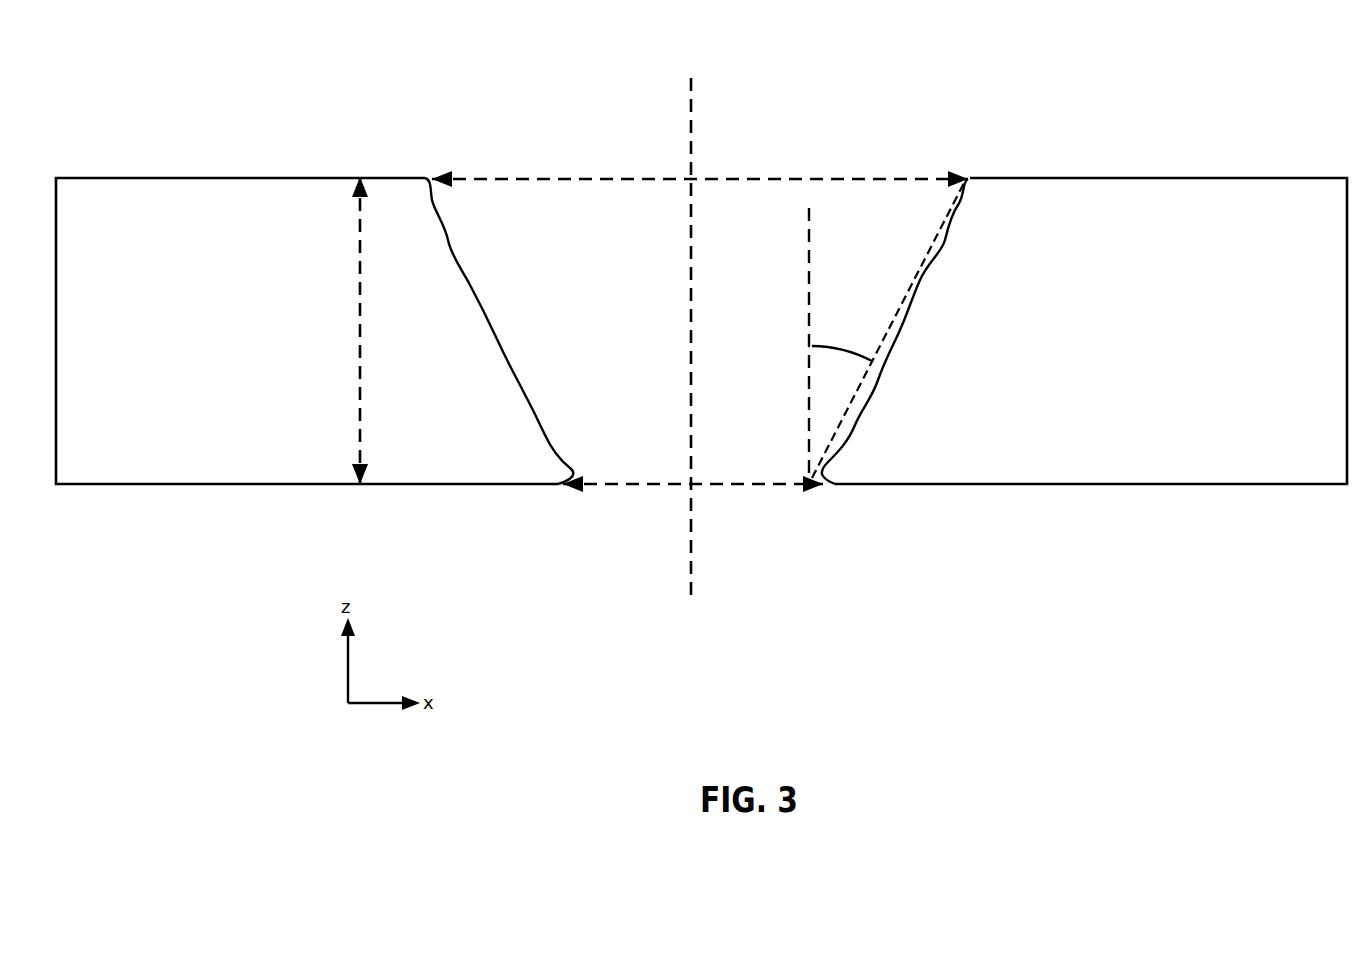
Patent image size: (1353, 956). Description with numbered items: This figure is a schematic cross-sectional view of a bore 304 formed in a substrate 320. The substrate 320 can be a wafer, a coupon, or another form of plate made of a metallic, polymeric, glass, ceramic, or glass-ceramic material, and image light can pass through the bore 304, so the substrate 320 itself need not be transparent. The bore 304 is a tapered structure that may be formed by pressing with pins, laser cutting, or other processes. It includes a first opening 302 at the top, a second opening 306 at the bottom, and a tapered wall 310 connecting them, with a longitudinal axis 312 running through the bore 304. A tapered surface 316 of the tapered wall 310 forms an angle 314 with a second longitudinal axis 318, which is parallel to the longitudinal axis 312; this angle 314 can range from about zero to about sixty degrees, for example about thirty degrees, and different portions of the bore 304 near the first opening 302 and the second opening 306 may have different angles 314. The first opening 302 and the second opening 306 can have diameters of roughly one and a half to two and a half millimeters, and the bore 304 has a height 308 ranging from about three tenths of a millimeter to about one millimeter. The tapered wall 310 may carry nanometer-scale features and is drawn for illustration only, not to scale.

The first opening 302 is at (512, 178).
The bore 304 is at (750, 207).
The second opening 306 is at (645, 488).
The height 308 is at (355, 408).
The tapered wall 310 is at (865, 403).
The longitudinal axis 312 is at (690, 105).
The angle 314 is at (842, 347).
The tapered surface 316 is at (928, 250).
The longitudinal axis 318 is at (810, 240).
The substrate 320 is at (1122, 195).